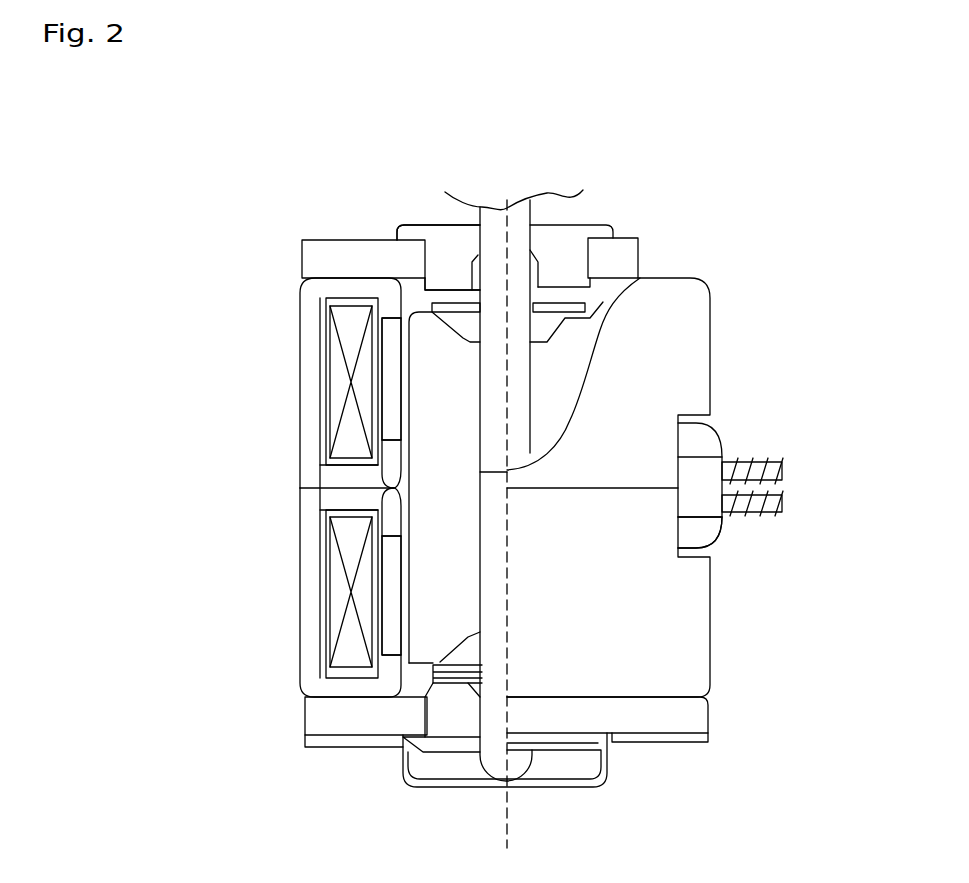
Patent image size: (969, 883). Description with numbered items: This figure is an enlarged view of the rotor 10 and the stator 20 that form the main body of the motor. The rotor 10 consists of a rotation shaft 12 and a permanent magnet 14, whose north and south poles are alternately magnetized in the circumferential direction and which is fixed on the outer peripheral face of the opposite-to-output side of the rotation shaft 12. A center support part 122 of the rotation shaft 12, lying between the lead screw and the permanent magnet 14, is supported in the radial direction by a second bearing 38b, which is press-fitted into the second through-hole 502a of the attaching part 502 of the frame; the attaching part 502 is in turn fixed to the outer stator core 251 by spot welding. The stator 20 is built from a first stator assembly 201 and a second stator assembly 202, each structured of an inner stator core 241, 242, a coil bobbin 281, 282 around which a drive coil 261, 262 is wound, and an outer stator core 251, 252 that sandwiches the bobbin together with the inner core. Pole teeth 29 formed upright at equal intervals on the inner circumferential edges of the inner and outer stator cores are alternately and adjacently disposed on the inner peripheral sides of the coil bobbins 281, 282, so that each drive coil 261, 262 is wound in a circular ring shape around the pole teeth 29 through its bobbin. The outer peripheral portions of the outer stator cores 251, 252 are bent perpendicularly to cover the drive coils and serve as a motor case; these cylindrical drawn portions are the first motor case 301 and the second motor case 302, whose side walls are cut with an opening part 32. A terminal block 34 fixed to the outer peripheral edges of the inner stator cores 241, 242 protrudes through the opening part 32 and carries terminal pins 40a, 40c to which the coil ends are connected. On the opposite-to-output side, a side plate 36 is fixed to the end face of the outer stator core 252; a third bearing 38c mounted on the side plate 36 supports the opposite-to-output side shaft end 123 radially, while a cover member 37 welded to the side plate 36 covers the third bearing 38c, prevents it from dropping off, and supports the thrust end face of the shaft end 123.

The rotor 10 is at (792, 125).
The rotation shaft 12 is at (518, 357).
The permanent magnet 14 is at (577, 330).
The center support part 122 is at (518, 235).
The opposite-to-output side shaft end 123 is at (517, 760).
The second bearing 38b is at (462, 226).
The third bearing 38c is at (438, 743).
The attaching part 502 is at (320, 252).
The second through-hole 502a is at (433, 256).
The opening part 32 is at (707, 423).
The terminal block 34 is at (707, 528).
The terminal pin 40a is at (747, 462).
The terminal pin 40c is at (748, 513).
The side plate 36 is at (687, 720).
The cover member 37 is at (437, 780).
The stator 20 is at (65, 428).
The first stator assembly 201 is at (267, 403).
The second stator assembly 202 is at (267, 573).
The first motor case 301 is at (307, 383).
The second motor case 302 is at (300, 592).
The outer stator core 251 is at (307, 260).
The outer stator core 252 is at (337, 689).
The coil bobbin 281 is at (303, 303).
The coil bobbin 282 is at (330, 668).
The drive coil 261 is at (330, 355).
The drive coil 262 is at (330, 615).
The inner stator core 241 is at (323, 477).
The inner stator core 242 is at (323, 498).
The pole teeth 29 is at (393, 407).